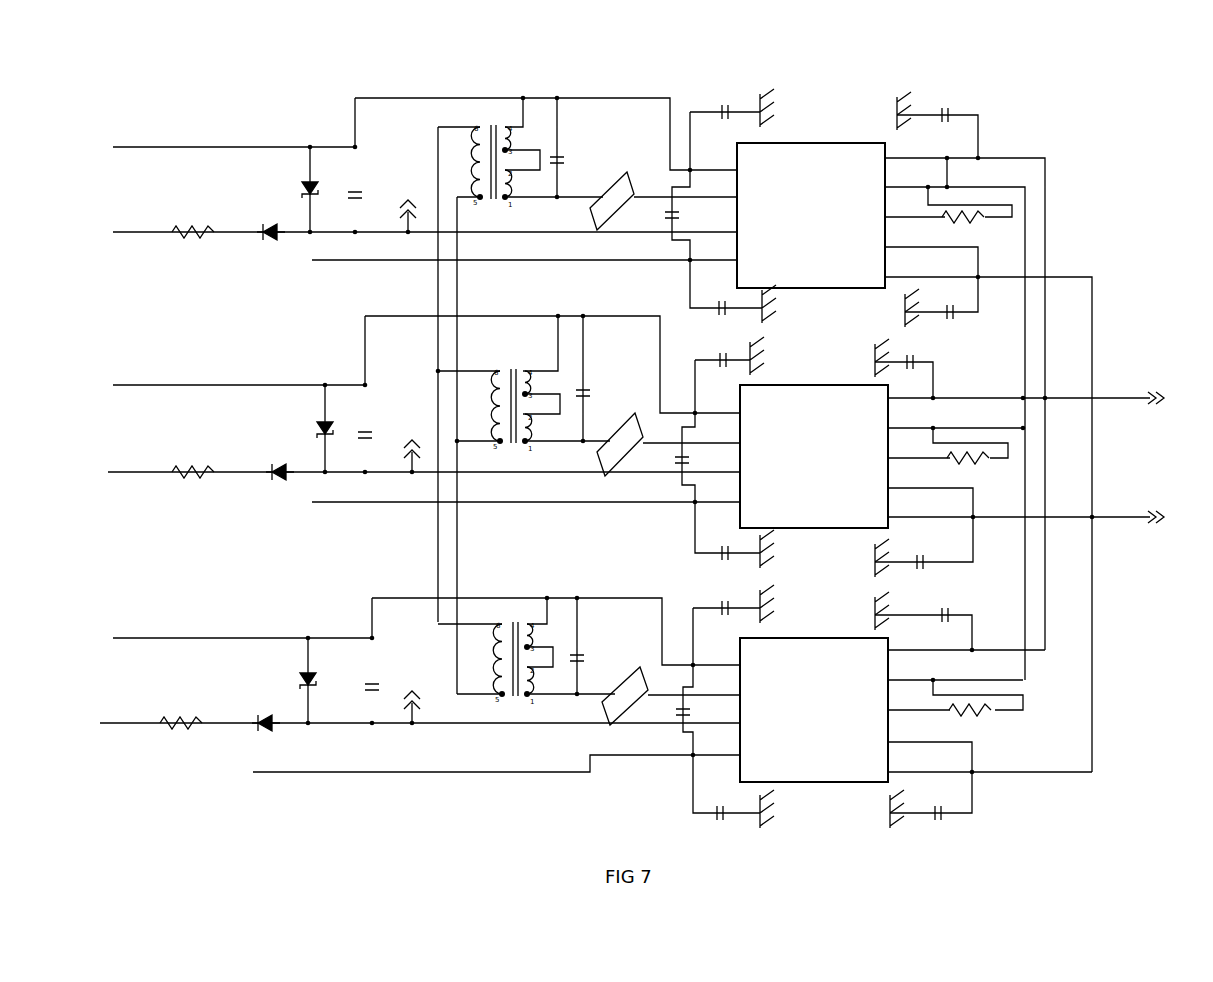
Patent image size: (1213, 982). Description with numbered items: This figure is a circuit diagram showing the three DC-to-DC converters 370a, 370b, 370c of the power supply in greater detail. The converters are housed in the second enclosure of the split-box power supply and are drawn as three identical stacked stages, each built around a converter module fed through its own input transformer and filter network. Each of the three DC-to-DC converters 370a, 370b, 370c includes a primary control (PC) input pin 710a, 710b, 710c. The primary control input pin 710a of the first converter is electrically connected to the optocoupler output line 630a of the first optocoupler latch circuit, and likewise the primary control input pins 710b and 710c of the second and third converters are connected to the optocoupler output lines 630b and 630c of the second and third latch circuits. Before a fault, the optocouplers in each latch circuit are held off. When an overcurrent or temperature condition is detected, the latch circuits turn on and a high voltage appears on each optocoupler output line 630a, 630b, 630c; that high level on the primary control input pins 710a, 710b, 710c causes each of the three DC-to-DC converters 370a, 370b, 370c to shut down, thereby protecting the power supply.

The optocoupler output line 630a is at (400, 185).
The optocoupler output line 630b is at (402, 437).
The optocoupler output line 630c is at (402, 678).
The primary control input pin 710a is at (740, 221).
The primary control input pin 710b is at (745, 478).
The primary control input pin 710c is at (745, 732).
The DC-to-DC converter 370a is at (807, 178).
The DC-to-DC converter 370b is at (825, 475).
The DC-to-DC converter 370c is at (838, 722).